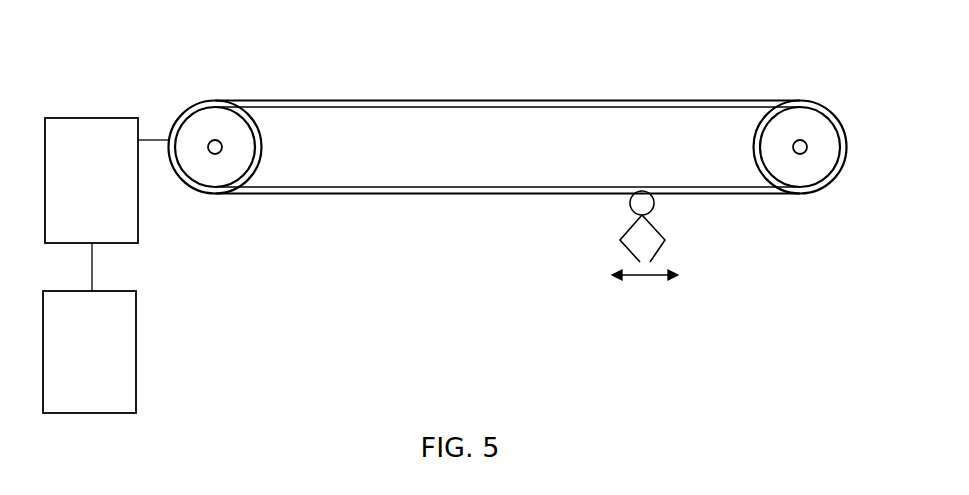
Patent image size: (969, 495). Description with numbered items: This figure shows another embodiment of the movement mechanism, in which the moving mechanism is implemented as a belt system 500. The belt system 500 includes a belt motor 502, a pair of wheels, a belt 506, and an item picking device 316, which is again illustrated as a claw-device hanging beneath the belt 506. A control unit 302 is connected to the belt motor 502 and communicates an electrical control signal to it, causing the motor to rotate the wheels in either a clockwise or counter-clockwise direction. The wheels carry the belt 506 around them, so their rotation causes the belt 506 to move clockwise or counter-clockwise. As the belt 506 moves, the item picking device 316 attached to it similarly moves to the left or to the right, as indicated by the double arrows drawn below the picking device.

The belt system 500 is at (574, 93).
The belt motor 502 is at (91, 180).
The control unit 302 is at (89, 352).
The belt 506 is at (677, 98).
The item picking device 316 is at (658, 230).